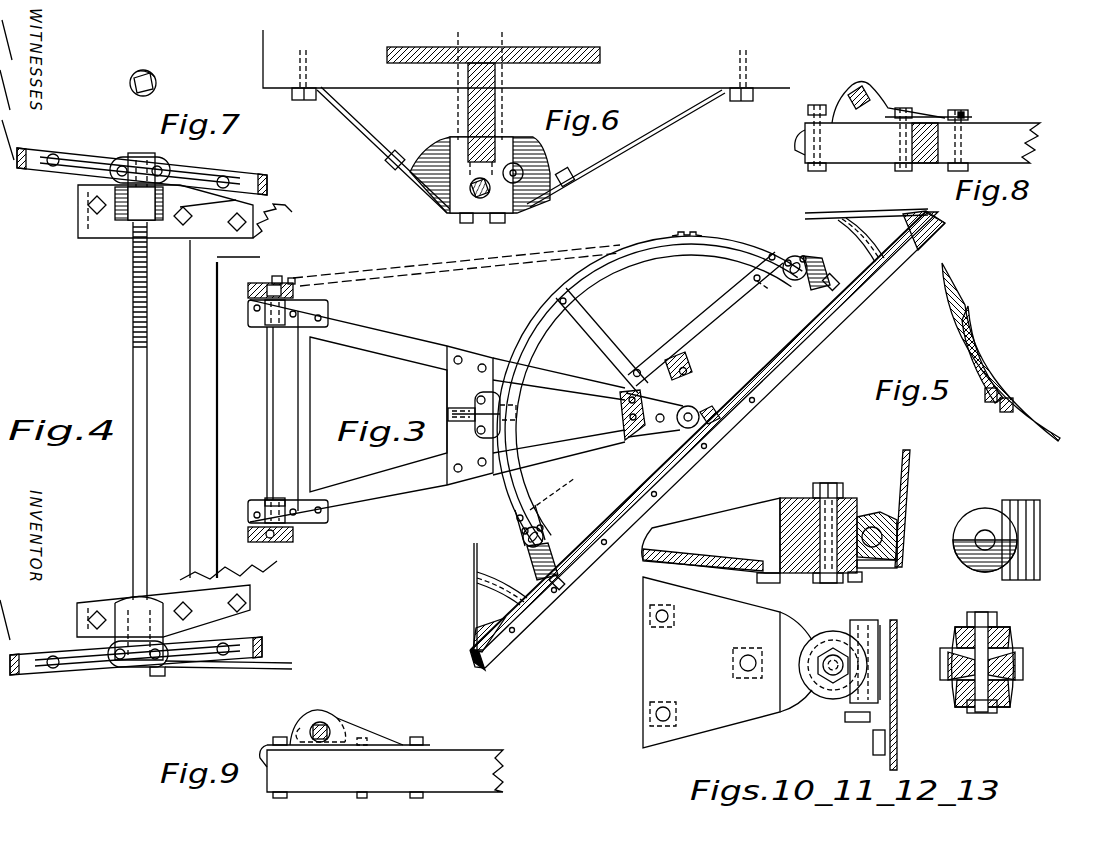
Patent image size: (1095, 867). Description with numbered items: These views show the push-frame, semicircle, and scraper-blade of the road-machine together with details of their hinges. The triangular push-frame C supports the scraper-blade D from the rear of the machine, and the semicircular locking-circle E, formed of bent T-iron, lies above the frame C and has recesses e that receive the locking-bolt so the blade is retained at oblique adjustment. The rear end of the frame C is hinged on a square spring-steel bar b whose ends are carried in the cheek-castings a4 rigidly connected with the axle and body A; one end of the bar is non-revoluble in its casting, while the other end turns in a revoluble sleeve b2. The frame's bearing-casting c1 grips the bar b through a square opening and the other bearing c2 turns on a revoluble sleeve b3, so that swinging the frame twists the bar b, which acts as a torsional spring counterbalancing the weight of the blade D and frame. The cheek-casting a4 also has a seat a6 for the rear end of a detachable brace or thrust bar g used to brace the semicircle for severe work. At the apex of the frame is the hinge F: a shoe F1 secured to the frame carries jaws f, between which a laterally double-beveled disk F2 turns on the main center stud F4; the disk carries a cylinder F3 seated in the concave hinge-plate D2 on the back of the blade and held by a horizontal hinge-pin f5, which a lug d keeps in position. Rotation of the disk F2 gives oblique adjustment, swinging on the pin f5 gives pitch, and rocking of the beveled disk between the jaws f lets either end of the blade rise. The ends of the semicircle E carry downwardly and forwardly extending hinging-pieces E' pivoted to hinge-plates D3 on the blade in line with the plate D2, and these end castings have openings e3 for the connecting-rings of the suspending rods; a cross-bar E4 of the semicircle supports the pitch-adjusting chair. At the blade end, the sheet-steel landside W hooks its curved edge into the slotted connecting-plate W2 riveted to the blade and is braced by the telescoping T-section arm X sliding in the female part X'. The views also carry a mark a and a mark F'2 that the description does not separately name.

In FIG. 6, the body A is at (526, 59).
In FIG. 3, the locking catch a is at (462, 432).
In FIG. 7, the cheek-casting a4 is at (142, 166).
In FIG. 4, the cheek-casting a4 is at (136, 666).
In FIG. 6, the cheek-casting a4 is at (480, 180).
In FIG. 3, the cheek-casting a4 is at (274, 413).
In FIG. 4, the seat and bolt-hole a6 is at (160, 676).
In FIG. 6, the seat and bolt-hole a6 is at (522, 131).
In FIG. 3, the seat and bolt-hole a6 is at (294, 278).
In FIG. 4, the bar b is at (140, 424).
In FIG. 6, the bar b is at (480, 200).
In FIG. 8, the bar b is at (856, 90).
In FIG. 3, the bar b is at (270, 413).
In FIG. 9, the bar b is at (320, 722).
In FIG. 7, the revoluble sleeve b2 is at (157, 80).
In FIG. 6, the revoluble sleeve b2 is at (446, 213).
In FIG. 3, the revoluble sleeve b2 is at (284, 280).
In FIG. 3, the revoluble sleeve b3 is at (266, 500).
In FIG. 9, the revoluble sleeve b3 is at (302, 724).
In FIG. 7, the push-frame C is at (241, 236).
In FIG. 4, the push-frame C is at (231, 433).
In FIG. 8, the push-frame C is at (917, 138).
In FIG. 3, the push-frame C is at (437, 411).
In FIG. 9, the push-frame C is at (381, 767).
In FIG. 7, the bearing-casting c1 is at (165, 214).
In FIG. 8, the bearing-casting c1 is at (878, 95).
In FIG. 3, the bearing-casting c1 is at (300, 312).
In FIG. 4, the bearing-casting c2 is at (163, 618).
In FIG. 3, the bearing-casting c2 is at (300, 516).
In FIG. 9, the bearing-casting c2 is at (348, 717).
In FIG. 4, the brace or thrust bar g is at (268, 668).
In FIG. 3, the brace or thrust bar g is at (456, 269).
In FIG. 3, the semicircle E is at (649, 391).
In FIG. 3, the recesses e is at (600, 305).
In FIG. 3, the hinging-pieces E' is at (664, 417).
In FIG. 3, the cross-bar E4 is at (709, 319).
In FIG. 3, the openings e3 is at (803, 258).
In FIG. 3, the scraper-blade D is at (707, 440).
In FIG. 10, the scraper-blade D is at (913, 507).
In FIG. 11, the scraper-blade D is at (898, 738).
In FIG. 3, the hinge-plate D2 is at (800, 358).
In FIG. 10, the hinge-plate D2 is at (905, 528).
In FIG. 11, the hinge-plate D2 is at (885, 650).
In FIG. 3, the hinge-plates D3 is at (560, 556).
In FIG. 3, the hinge F is at (662, 413).
In FIG. 10, the hinge F is at (816, 519).
In FIG. 10, the plate or shoe F1 is at (711, 535).
In FIG. 11, the plate or shoe F1 is at (727, 662).
In FIG. 10, the double-beveled disk F2 is at (797, 584).
In FIG. 11, the double-beveled disk F2 is at (817, 628).
In FIG. 12, the double-beveled disk F2 is at (973, 515).
In FIG. 10, the cylinder F3 is at (905, 552).
In FIG. 11, the cylinder F3 is at (875, 672).
In FIG. 12, the cylinder F3 is at (1021, 529).
In FIG. 13, the cylinder F3 is at (1010, 648).
In FIG. 10, the main center stud F4 is at (828, 484).
In FIG. 11, the main center stud F4 is at (828, 680).
In FIG. 13, the main center stud F4 is at (981, 715).
In FIG. 13, the roller flange F'2 is at (1015, 662).
In FIG. 10, the jaws f is at (868, 515).
In FIG. 11, the jaws f is at (824, 665).
In FIG. 13, the jaws f is at (1010, 635).
In FIG. 10, the hinge-pin f5 is at (875, 525).
In FIG. 11, the hinge-pin f5 is at (850, 718).
In FIG. 11, the lug d is at (873, 738).
In FIG. 3, the landside-plate W is at (686, 432).
In FIG. 3, the connecting-plate W2 is at (691, 423).
In FIG. 3, the brace-arm X is at (680, 411).
In FIG. 3, the female brace part X' is at (684, 410).